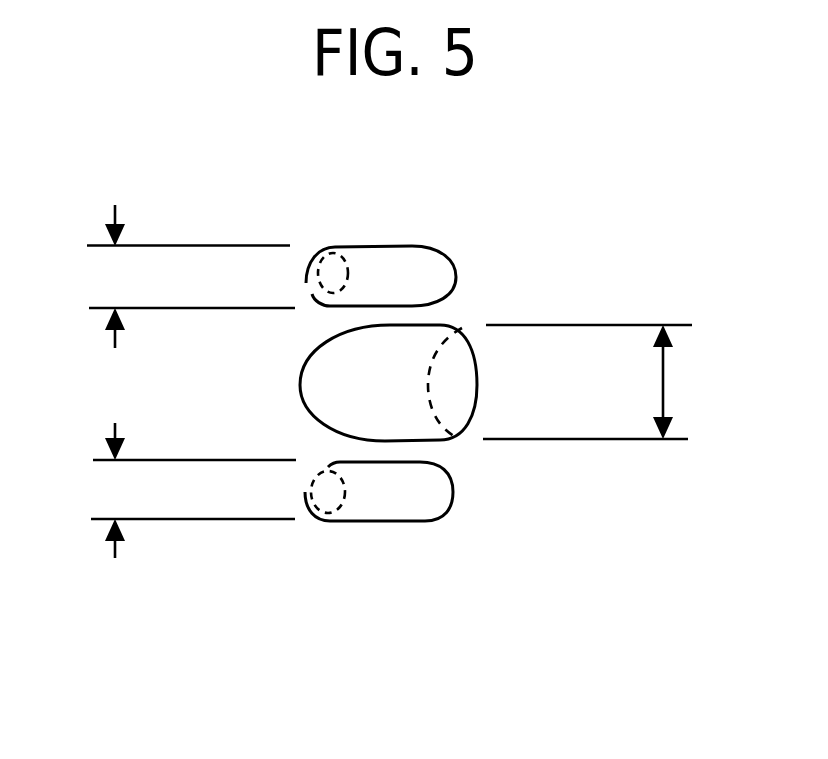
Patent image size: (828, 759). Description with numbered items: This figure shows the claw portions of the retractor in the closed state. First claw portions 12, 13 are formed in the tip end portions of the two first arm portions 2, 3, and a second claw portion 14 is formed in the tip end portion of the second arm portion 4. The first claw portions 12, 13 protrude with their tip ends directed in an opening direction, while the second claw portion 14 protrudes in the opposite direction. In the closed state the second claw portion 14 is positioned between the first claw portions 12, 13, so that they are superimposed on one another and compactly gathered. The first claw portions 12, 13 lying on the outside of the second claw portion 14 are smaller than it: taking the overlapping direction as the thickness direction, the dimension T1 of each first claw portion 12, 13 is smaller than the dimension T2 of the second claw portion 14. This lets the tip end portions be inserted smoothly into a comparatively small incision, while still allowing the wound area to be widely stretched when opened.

The first arm portion 2 is at (333, 255).
The first arm portion 3 is at (313, 522).
The second arm portion 4 is at (463, 327).
The first claw portion 12 is at (402, 270).
The first claw portion 13 is at (388, 500).
The second claw portion 14 is at (335, 388).
The dimension of first claw portion in thickness direction T1 is at (191, 383).
The dimension of second claw portion in thickness direction T2 is at (604, 382).